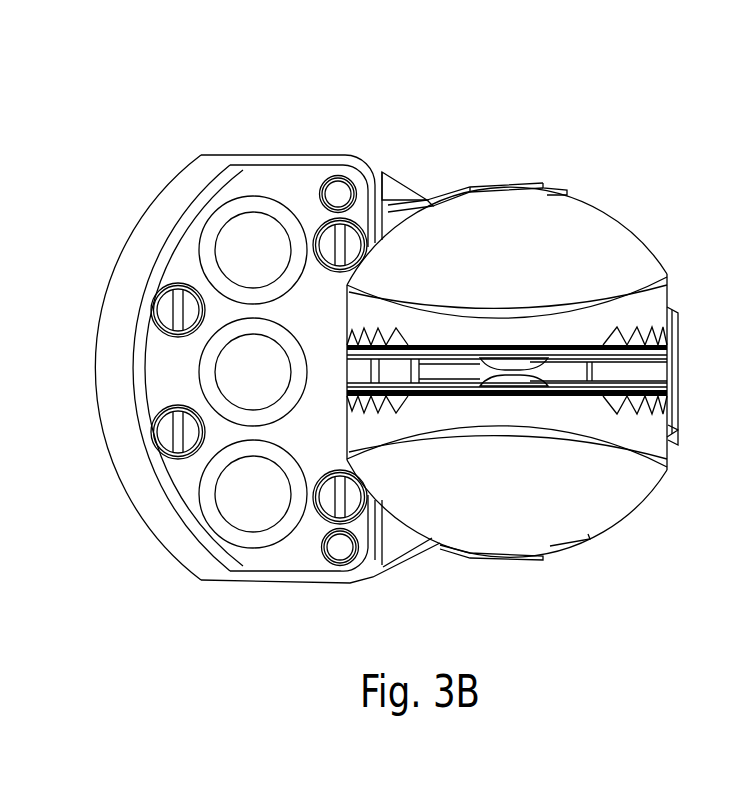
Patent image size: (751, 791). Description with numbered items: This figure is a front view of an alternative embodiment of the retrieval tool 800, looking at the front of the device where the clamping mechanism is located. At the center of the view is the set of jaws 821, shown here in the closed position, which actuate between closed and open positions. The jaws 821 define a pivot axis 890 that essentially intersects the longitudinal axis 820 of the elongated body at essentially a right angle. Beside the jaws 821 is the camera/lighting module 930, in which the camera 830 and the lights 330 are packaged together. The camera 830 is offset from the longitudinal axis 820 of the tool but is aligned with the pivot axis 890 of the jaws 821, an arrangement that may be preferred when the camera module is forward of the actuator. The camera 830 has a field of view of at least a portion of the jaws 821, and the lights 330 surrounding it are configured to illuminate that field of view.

The retrieval tool 800 is at (405, 78).
The light 330 is at (237, 238).
The camera/lighting module 930 is at (120, 247).
The camera 830 is at (207, 376).
The jaws 821 is at (587, 222).
The pivot axis 890 is at (673, 368).
The longitudinal axis 820 is at (503, 374).